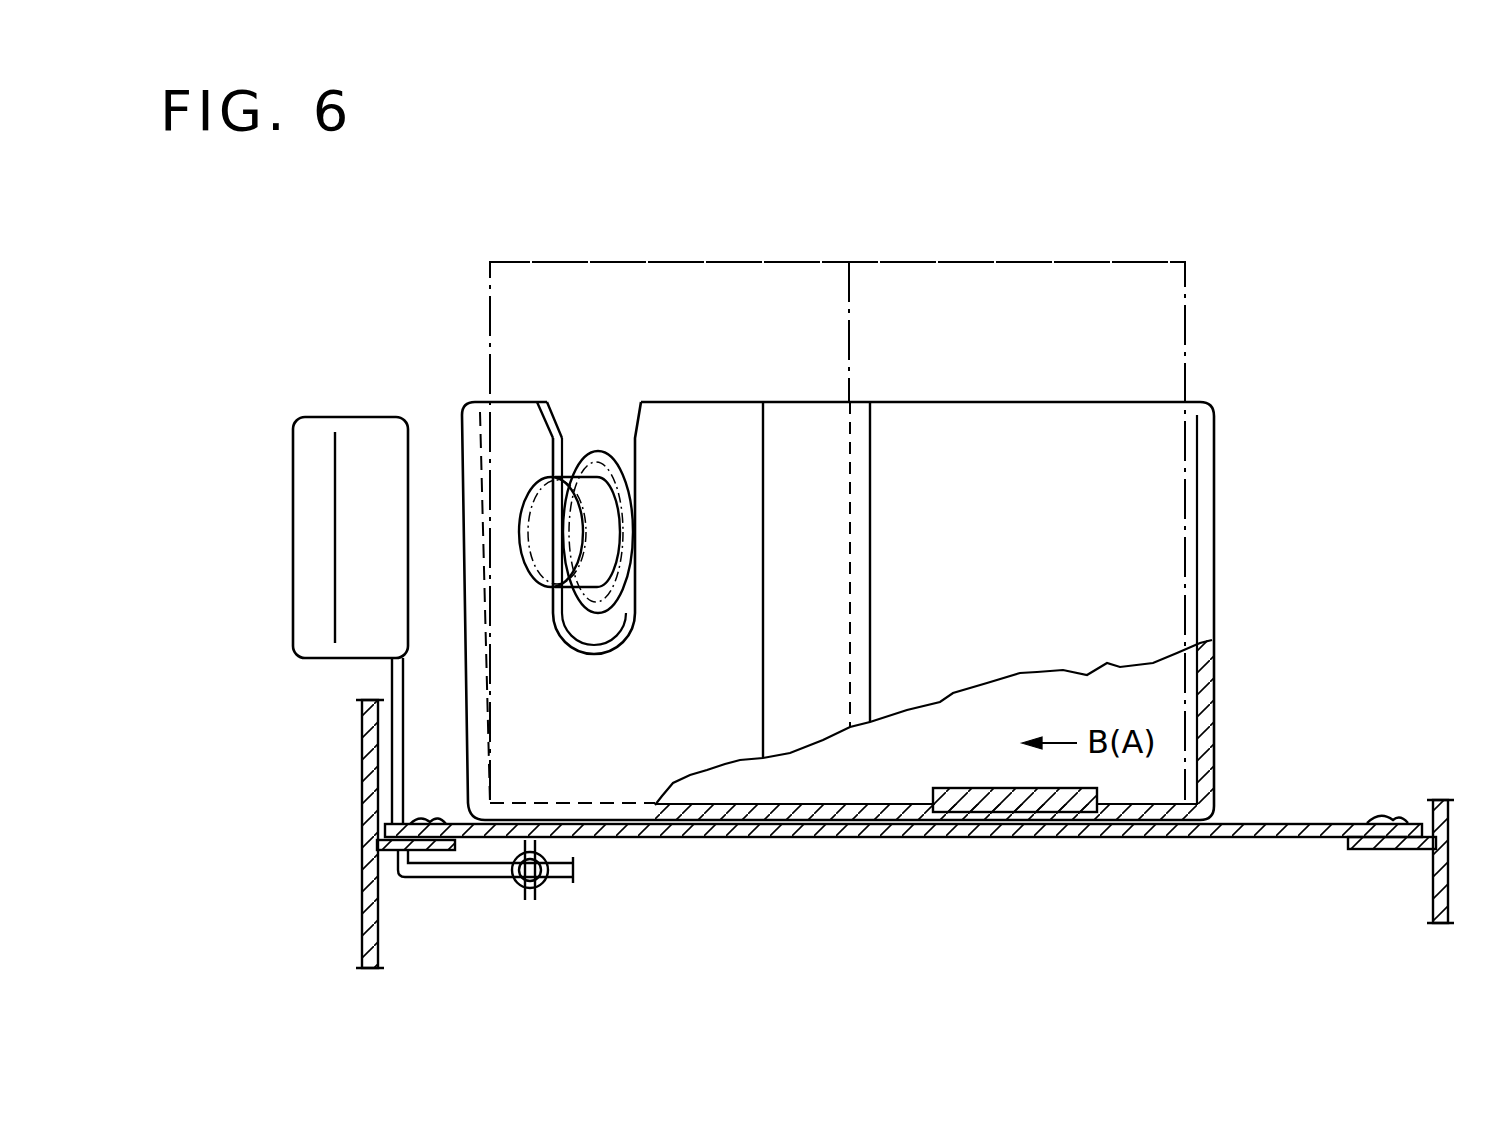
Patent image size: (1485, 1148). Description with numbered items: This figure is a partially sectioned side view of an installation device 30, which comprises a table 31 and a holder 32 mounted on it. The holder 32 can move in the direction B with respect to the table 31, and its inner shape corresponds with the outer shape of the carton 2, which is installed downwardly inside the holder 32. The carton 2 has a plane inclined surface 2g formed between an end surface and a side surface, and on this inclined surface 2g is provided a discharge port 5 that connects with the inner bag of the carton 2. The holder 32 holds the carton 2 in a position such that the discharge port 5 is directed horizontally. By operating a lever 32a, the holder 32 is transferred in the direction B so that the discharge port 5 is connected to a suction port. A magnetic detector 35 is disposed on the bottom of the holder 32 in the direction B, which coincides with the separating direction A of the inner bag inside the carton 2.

The carton 2 is at (1185, 355).
The inclined surface 2g is at (797, 297).
The discharge port 5 is at (540, 558).
The installation device 30 is at (1250, 258).
The table 31 is at (732, 838).
The holder 32 is at (988, 433).
The lever 32a is at (322, 415).
The magnetic detector 35 is at (1003, 787).